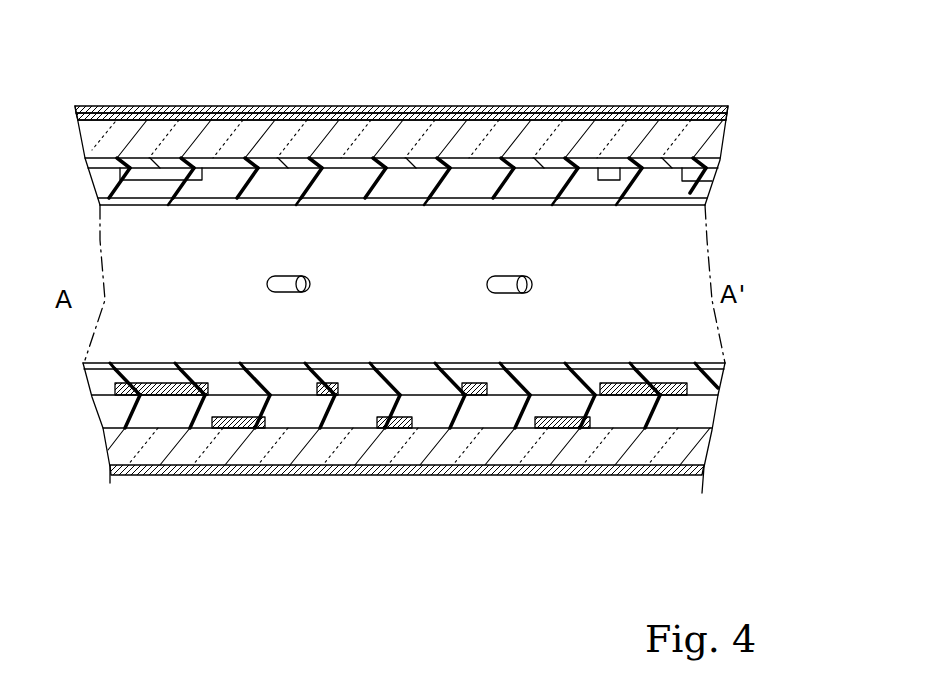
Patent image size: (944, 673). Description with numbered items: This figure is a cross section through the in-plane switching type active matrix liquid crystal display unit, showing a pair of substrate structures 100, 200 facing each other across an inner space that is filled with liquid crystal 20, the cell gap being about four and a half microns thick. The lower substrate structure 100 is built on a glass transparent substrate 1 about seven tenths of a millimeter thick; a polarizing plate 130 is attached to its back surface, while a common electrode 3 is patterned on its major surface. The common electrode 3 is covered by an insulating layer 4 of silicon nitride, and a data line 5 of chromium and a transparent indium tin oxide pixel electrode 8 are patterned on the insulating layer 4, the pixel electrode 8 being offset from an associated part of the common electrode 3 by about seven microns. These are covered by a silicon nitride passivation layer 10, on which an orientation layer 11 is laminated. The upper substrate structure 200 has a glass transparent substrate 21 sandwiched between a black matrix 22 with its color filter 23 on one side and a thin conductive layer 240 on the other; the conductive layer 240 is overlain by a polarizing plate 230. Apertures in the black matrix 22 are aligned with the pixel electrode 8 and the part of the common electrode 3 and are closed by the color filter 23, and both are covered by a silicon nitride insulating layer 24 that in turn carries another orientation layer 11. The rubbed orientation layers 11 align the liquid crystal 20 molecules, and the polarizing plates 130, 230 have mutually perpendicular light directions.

The transparent substrate 1 is at (142, 447).
The common electrode 3 is at (557, 427).
The insulating layer 4 is at (612, 427).
The data line 5 is at (650, 397).
The pixel electrode 8 is at (338, 396).
The passivation layer 10 is at (234, 393).
The orientation layer 11 is at (143, 362).
The liquid crystal 20 is at (530, 287).
The transparent substrate 21 is at (113, 145).
The black matrix 22 is at (673, 165).
The color filter 23 is at (610, 200).
The insulating layer 24 is at (488, 192).
The substrate structure 100 is at (447, 546).
The polarizing plate 130 is at (236, 470).
The substrate structure 200 is at (405, 50).
The polarizing plate 230 is at (354, 104).
The conductive layer 240 is at (207, 105).